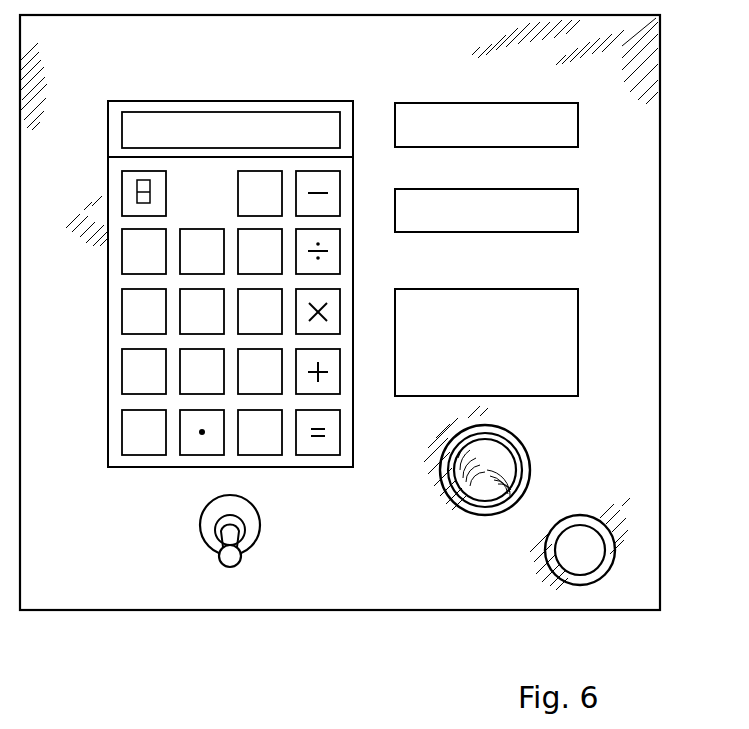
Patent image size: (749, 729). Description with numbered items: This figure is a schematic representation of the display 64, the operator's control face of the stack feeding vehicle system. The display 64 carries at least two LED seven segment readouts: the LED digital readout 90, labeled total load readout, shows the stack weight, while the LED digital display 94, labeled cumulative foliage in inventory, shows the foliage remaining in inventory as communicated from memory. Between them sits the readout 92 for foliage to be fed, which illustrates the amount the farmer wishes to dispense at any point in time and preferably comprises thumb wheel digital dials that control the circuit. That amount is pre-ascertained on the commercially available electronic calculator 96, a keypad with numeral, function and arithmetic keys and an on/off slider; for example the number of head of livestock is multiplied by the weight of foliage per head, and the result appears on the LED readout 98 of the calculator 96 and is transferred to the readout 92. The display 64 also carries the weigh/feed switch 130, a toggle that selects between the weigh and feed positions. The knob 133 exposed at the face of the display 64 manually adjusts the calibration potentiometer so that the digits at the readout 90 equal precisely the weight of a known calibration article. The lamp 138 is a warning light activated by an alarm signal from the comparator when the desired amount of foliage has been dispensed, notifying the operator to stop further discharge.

The display 64 is at (413, 587).
The electronic calculator 96 is at (213, 307).
The LED readout of the calculator 98 is at (241, 141).
The LED digital readout 90 is at (578, 130).
The readout 92 is at (578, 216).
The LED digital display 94 is at (572, 341).
The weigh/feed switch 130 is at (201, 533).
The lamp 138 is at (510, 474).
The knob 133 is at (600, 551).